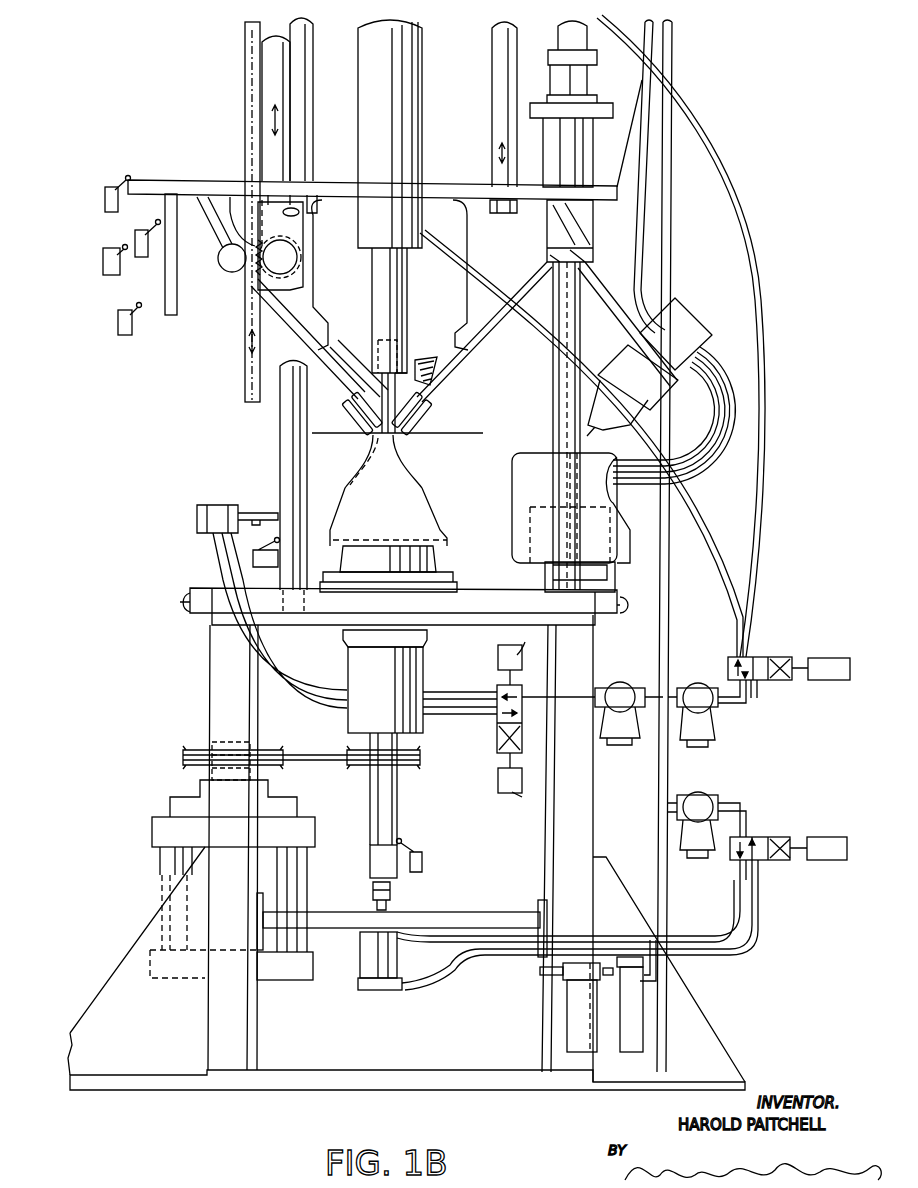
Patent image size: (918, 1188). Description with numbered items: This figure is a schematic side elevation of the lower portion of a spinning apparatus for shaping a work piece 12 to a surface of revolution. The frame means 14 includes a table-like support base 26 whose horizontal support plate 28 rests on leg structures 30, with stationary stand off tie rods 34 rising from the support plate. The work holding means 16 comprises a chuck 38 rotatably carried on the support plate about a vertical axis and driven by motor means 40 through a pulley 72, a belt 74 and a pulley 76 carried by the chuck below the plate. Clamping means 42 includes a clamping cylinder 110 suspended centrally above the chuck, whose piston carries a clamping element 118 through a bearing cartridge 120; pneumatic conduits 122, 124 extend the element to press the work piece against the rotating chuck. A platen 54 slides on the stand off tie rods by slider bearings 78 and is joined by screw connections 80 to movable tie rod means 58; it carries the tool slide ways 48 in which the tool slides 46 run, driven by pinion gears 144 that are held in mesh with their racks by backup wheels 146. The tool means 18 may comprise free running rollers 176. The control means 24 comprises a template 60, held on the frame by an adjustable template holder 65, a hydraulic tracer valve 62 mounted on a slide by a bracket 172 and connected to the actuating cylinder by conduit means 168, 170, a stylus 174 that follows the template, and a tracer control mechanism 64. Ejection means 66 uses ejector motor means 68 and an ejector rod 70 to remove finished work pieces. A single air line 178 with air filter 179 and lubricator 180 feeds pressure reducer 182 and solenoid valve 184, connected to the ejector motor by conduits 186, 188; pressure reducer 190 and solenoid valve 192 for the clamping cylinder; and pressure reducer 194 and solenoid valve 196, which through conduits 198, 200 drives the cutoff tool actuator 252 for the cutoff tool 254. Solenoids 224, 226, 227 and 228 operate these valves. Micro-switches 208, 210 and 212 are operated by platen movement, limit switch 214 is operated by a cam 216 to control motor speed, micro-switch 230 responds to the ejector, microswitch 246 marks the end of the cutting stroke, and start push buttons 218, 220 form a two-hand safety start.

The work piece 12 is at (420, 480).
The frame means 14 is at (219, 462).
The work holding means 16 is at (442, 422).
The tool means 18 is at (347, 419).
The control means 24 is at (774, 296).
The support base 26 is at (262, 691).
The support plate 28 is at (298, 620).
The leg structures 30 is at (262, 736).
The stand off tie rods 34 is at (553, 396).
The chuck 38 is at (437, 565).
The motor means 40 is at (308, 875).
The clamping means 42 is at (357, 293).
The tool slides 46 is at (337, 352).
The tool slide ways 48 is at (345, 307).
The platen 54 is at (315, 187).
The movable tie rod means 58 is at (492, 170).
The template 60 is at (615, 560).
The hydraulic tracer valve 62 is at (690, 302).
The tracer control mechanism 64 is at (520, 503).
The adjustable template holder 65 is at (513, 522).
The ejection means 66 is at (362, 862).
The ejector motor means 68 is at (358, 978).
The ejector rod 70 is at (370, 840).
The pulley 72 is at (278, 765).
The belt 74 is at (312, 755).
The pulley 76 is at (415, 757).
The slider bearings 78 is at (547, 176).
The screw connections 80 is at (498, 214).
The clamping cylinder 110 is at (422, 140).
The clamping element 118 is at (416, 370).
The bearing cartridge 120 is at (412, 317).
The conduit 122 is at (696, 140).
The conduit 124 is at (438, 245).
The pinion gears 144 is at (290, 248).
The backup wheels 146 is at (222, 270).
The conduit means 168 is at (622, 90).
The conduit means 170 is at (650, 62).
The bracket 172 is at (606, 300).
The stylus 174 is at (592, 440).
The free running rollers 176 is at (428, 401).
The air line 178 is at (662, 988).
The air filter 179 is at (560, 1022).
The lubricator 180 is at (643, 1028).
The pressure reducer 182 is at (700, 795).
The solenoid valve 184 is at (765, 837).
The conduit 186 is at (420, 936).
The conduit 188 is at (420, 984).
The pressure reducer 190 is at (710, 688).
The solenoid valve 192 is at (772, 657).
The pressure reducer 194 is at (630, 688).
The solenoid valve 196 is at (525, 735).
The conduit 198 is at (445, 692).
The conduit 200 is at (437, 715).
The micro-switch 208 is at (108, 187).
The limit switch 210 is at (103, 262).
The micro-switch 212 is at (120, 335).
The limit switch 214 is at (137, 255).
The cam 216 is at (175, 318).
The start push button 218 is at (200, 612).
The start push button 220 is at (603, 618).
The operating solenoid 224 is at (830, 657).
The operating solenoid 226 is at (497, 792).
The second solenoid 227 is at (500, 658).
The operating solenoid 228 is at (822, 837).
The micro-switch 230 is at (425, 867).
The microswitch 246 is at (262, 556).
The cutoff tool actuator 252 is at (215, 505).
The cutoff tool 254 is at (250, 508).